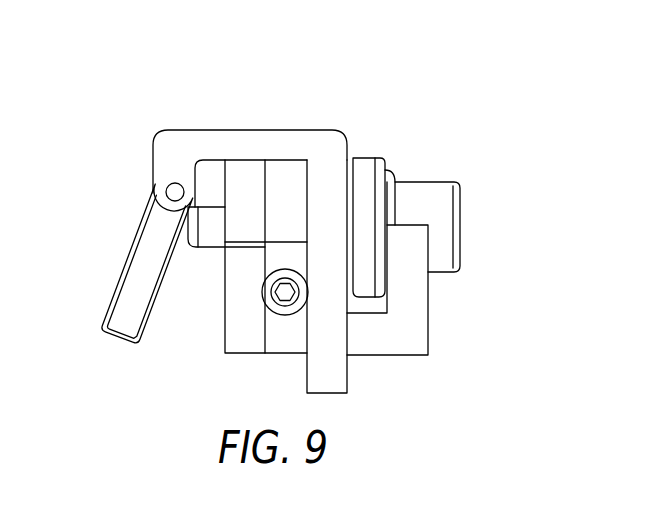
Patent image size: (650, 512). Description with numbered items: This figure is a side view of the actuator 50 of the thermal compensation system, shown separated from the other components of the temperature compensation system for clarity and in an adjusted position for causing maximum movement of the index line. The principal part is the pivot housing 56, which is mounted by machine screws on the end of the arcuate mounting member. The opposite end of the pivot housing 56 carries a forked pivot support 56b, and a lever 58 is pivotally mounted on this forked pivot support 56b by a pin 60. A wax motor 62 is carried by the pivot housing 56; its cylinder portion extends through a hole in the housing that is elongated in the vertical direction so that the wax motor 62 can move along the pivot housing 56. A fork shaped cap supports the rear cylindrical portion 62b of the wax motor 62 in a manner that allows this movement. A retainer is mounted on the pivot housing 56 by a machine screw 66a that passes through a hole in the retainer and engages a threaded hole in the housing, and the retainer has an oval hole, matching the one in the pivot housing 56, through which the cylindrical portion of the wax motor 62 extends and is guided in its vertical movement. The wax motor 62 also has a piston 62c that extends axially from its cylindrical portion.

The actuator 50 is at (128, 137).
The pivot housing 56 is at (250, 130).
The forked pivot support 56b is at (175, 147).
The lever 58 is at (128, 263).
The pin 60 is at (172, 190).
The wax motor 62 is at (366, 158).
The rear cylindrical portion 62b is at (427, 182).
The piston 62c is at (210, 248).
The machine screw 66a is at (283, 307).